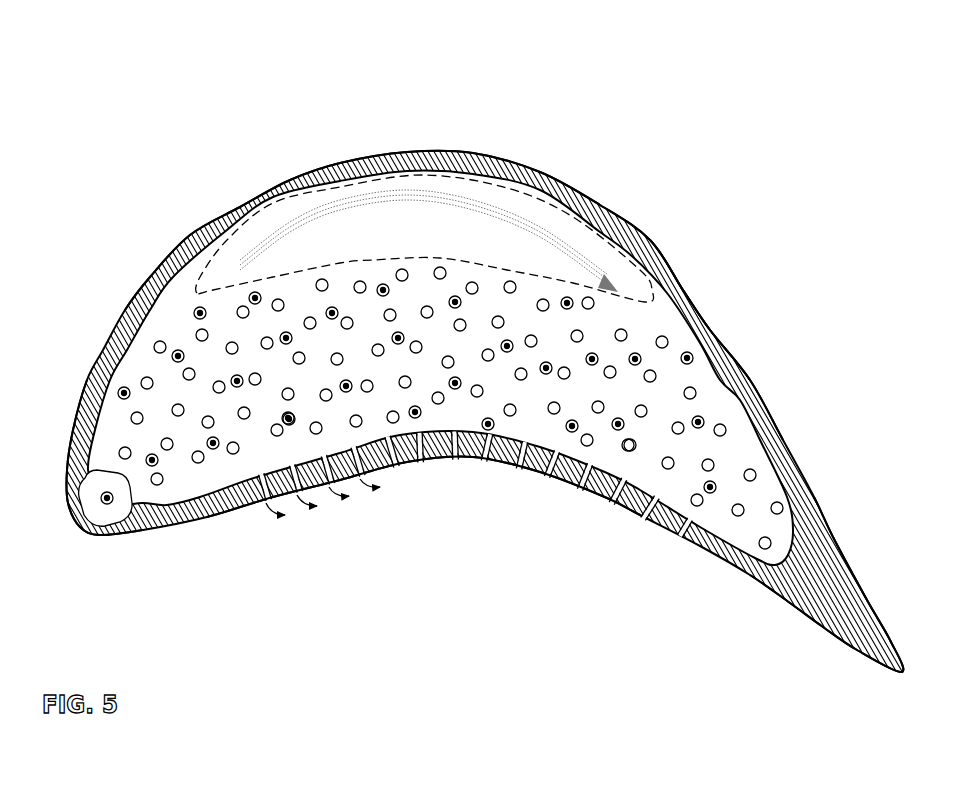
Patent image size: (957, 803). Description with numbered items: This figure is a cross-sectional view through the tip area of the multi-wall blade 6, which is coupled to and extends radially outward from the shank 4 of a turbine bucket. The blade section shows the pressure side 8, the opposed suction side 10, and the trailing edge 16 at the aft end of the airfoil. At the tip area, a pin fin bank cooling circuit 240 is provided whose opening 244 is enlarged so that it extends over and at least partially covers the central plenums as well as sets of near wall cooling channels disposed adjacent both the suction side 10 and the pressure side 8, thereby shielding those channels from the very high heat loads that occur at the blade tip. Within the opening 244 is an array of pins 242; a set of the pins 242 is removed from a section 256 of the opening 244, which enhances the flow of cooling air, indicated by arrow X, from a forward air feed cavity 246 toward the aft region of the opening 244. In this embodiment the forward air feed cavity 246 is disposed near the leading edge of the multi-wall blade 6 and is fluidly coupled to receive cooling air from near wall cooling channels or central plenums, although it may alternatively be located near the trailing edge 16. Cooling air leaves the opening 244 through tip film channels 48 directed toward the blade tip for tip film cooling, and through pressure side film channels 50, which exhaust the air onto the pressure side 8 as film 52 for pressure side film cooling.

The shank 4 is at (54, 542).
The multi-wall blade 6 is at (725, 105).
The pressure side 8 is at (331, 547).
The suction side 10 is at (432, 100).
The trailing edge 16 is at (824, 671).
The tip film channel 48 is at (173, 350).
The pressure side film channel 50 is at (518, 462).
The pressure side film 52 is at (291, 525).
The pin fin bank cooling circuit 240 is at (286, 205).
The pins 242 is at (543, 299).
The opening 244 is at (685, 308).
The forward air feed cavity 246 is at (134, 527).
The section 256 is at (400, 232).
The flow of cooling air X is at (590, 253).